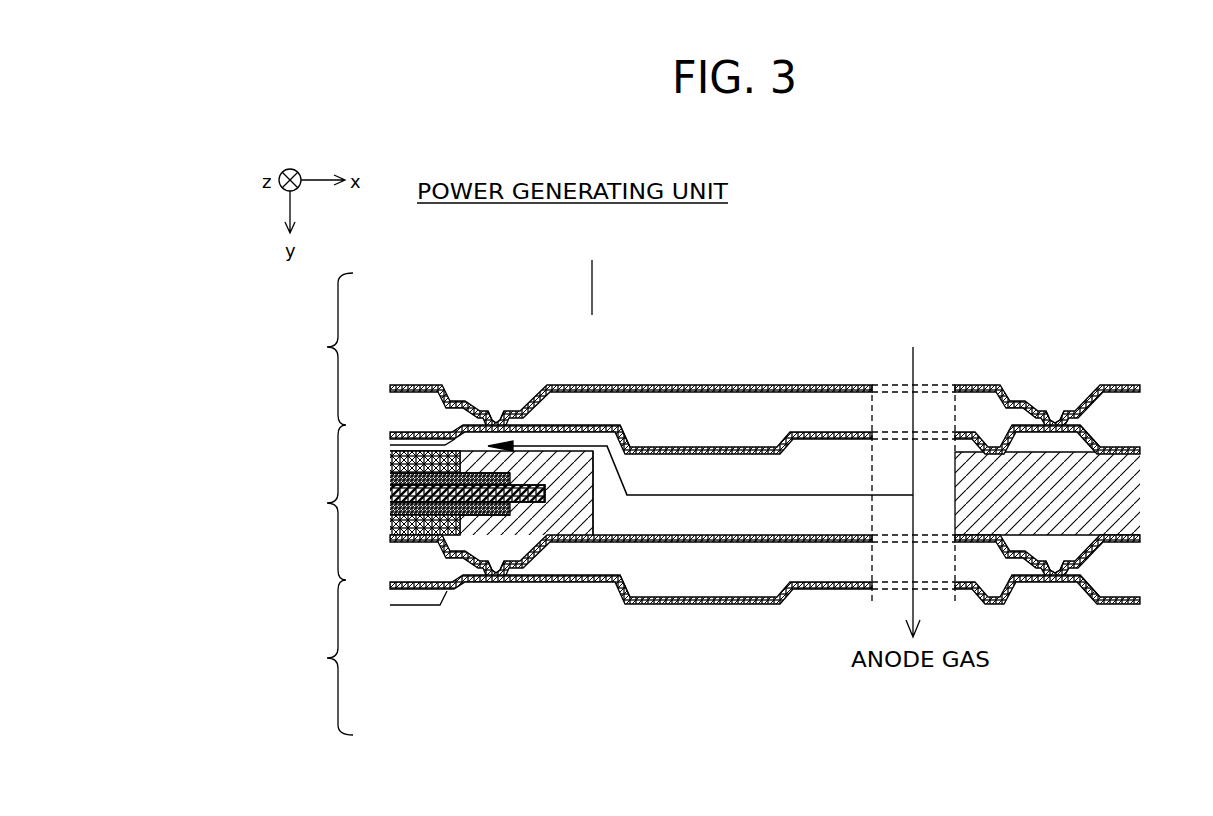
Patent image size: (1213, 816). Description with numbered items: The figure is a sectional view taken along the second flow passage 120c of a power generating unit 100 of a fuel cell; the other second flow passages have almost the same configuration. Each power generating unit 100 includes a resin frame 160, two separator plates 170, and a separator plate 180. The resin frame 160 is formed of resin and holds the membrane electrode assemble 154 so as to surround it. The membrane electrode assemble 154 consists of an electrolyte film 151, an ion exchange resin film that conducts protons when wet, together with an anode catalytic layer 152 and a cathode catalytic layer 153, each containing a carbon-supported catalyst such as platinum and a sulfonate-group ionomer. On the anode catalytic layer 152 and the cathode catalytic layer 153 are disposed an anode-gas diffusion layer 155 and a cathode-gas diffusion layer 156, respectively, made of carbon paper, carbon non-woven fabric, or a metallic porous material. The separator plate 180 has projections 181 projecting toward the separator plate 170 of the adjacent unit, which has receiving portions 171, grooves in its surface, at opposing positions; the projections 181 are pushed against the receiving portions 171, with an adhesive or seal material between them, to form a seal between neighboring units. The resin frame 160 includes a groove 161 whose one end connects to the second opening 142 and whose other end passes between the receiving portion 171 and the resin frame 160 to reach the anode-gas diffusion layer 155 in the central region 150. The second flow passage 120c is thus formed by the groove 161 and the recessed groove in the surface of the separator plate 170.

The power generating unit 100 is at (317, 504).
The second flow passage 120c is at (742, 488).
The second opening 142 is at (884, 430).
The central region 150 is at (592, 287).
The electrolyte film 151 is at (493, 503).
The anode catalytic layer 152 is at (512, 516).
The cathode catalytic layer 153 is at (470, 486).
The membrane electrode assemble 154 is at (597, 697).
The anode-gas diffusion layer 155 is at (408, 451).
The cathode-gas diffusion layer 156 is at (423, 535).
The resin frame 160 is at (1095, 513).
The groove 161 is at (593, 518).
The separator plate 170 is at (1136, 446).
The receiving portion 171 is at (569, 406).
The separator plate 180 is at (1138, 385).
The projection 181 is at (508, 377).